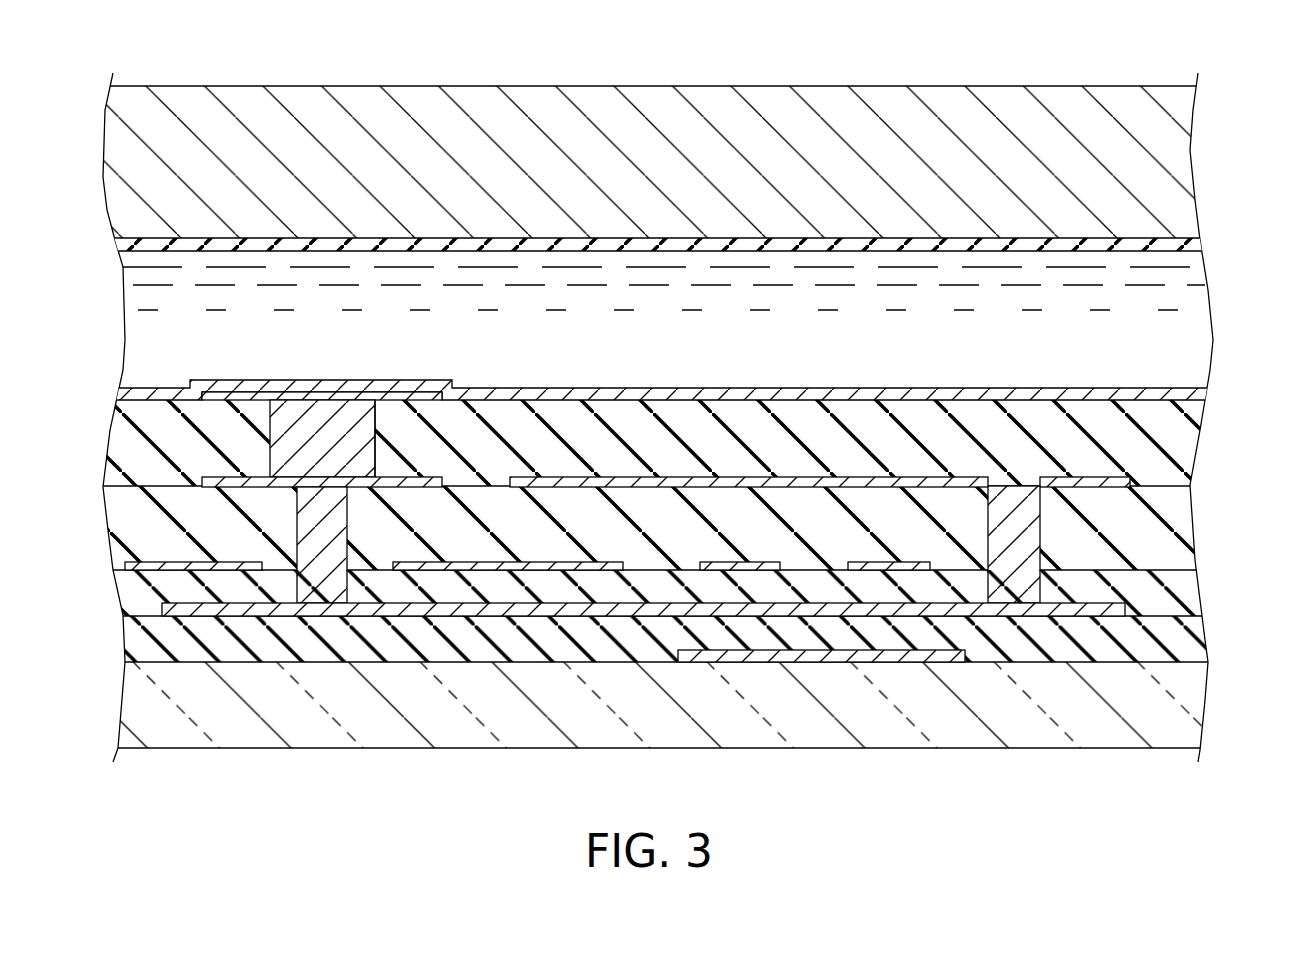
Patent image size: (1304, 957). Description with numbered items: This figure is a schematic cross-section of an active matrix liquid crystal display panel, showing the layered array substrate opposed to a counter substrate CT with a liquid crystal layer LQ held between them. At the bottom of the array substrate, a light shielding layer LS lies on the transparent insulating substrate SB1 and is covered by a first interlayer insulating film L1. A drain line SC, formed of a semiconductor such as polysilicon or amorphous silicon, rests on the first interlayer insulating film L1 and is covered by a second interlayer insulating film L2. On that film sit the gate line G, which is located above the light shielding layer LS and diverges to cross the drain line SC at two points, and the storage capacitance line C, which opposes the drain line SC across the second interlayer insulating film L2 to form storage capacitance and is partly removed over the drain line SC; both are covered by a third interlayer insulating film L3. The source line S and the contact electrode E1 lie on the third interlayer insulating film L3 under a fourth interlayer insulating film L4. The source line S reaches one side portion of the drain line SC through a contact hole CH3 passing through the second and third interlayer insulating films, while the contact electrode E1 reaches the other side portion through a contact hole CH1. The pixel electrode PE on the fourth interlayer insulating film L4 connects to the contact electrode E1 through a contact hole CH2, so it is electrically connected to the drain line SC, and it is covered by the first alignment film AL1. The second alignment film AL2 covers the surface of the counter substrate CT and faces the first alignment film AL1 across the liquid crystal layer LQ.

The counter substrate CT is at (1199, 157).
The second alignment film AL2 is at (128, 246).
The liquid crystal layer LQ is at (1182, 320).
The first alignment film AL1 is at (128, 396).
The fourth interlayer insulating film L4 is at (128, 440).
The third interlayer insulating film L3 is at (128, 515).
The second interlayer insulating film L2 is at (128, 594).
The first interlayer insulating film L1 is at (130, 640).
The pixel electrode PE is at (323, 396).
The contact electrode E1 is at (227, 477).
The contact hole CH1 is at (348, 535).
The contact hole CH2 is at (377, 443).
The contact hole CH3 is at (1040, 530).
The source line S is at (1097, 480).
The storage capacitance line C is at (478, 562).
The gate line G is at (740, 562).
The drain line SC is at (543, 616).
The light shielding layer LS is at (820, 660).
The transparent insulating substrate SB1 is at (1185, 705).